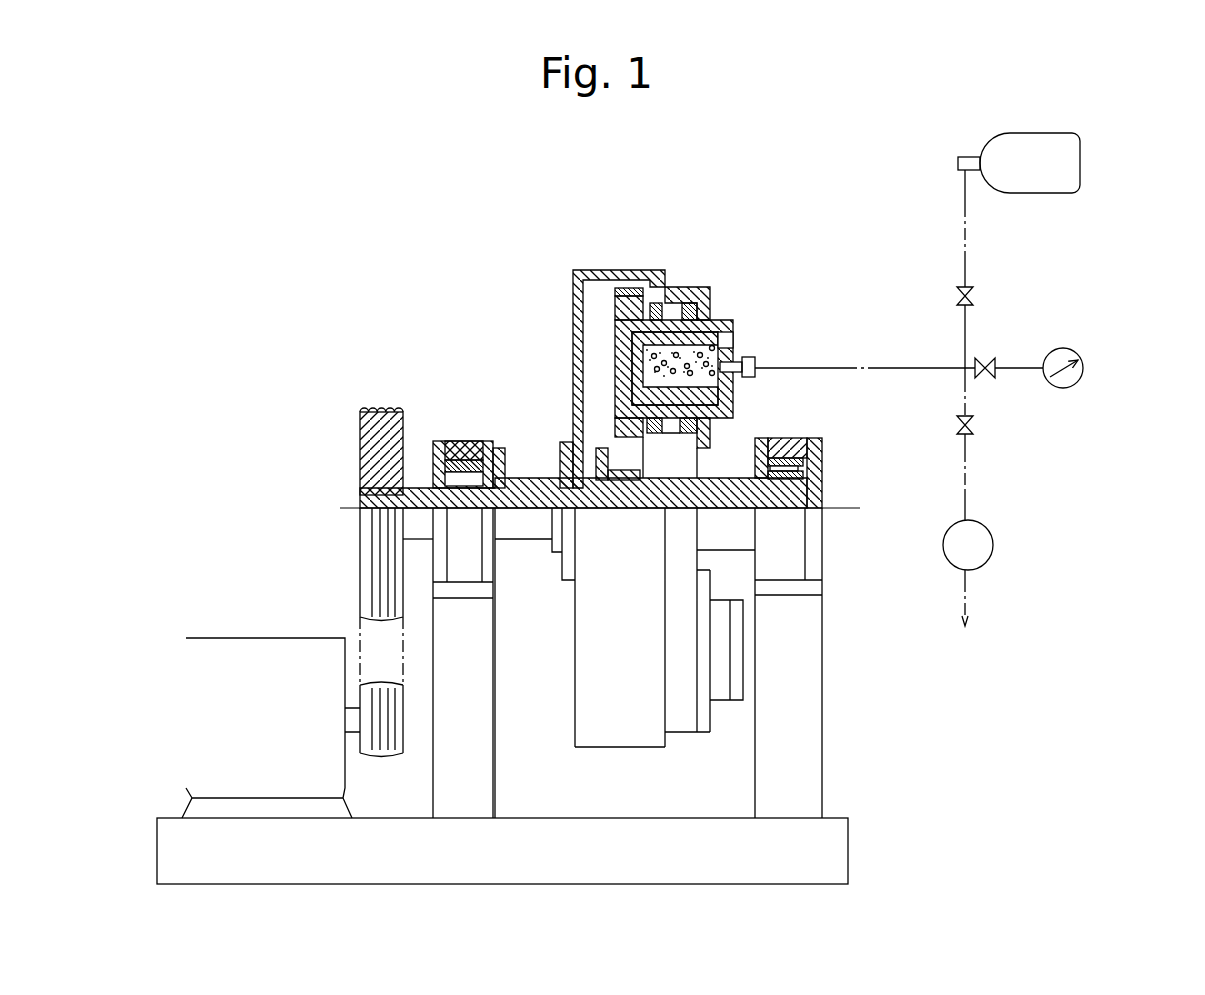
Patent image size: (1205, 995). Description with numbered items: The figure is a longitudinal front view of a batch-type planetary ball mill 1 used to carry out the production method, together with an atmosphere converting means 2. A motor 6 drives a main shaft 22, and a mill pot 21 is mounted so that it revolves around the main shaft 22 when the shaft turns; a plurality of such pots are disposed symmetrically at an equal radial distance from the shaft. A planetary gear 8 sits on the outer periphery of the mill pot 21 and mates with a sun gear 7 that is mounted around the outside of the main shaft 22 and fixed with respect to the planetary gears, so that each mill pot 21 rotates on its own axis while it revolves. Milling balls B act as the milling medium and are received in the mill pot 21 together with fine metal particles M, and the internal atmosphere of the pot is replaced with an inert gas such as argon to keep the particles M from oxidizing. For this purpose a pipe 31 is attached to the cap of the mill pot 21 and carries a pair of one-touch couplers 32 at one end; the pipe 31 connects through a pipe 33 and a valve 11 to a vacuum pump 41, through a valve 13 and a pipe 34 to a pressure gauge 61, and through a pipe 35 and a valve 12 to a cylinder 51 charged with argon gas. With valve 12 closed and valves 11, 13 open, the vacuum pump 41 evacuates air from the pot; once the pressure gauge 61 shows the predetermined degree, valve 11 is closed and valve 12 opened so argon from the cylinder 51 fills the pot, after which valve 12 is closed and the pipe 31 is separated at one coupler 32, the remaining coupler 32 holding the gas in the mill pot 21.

The planetary ball mill 1 is at (514, 284).
The atmosphere converting means 2 is at (962, 344).
The motor 6 is at (237, 638).
The sun gear 7 is at (602, 448).
The planetary gear 8 is at (625, 288).
The valve 11 is at (975, 425).
The valve 12 is at (958, 296).
The valve 13 is at (989, 362).
The mill pot 21 is at (720, 322).
The main shaft 22 is at (723, 477).
The pipe 31 is at (724, 343).
The one-touch coupler 32 is at (756, 362).
The pipe 33 is at (893, 370).
The pipe 34 is at (1020, 367).
The pipe 35 is at (965, 242).
The vacuum pump 41 is at (994, 548).
The cylinder 51 is at (1030, 133).
The pressure gauge 61 is at (1063, 389).
The milling balls B is at (713, 333).
The fine metal particles M is at (648, 351).